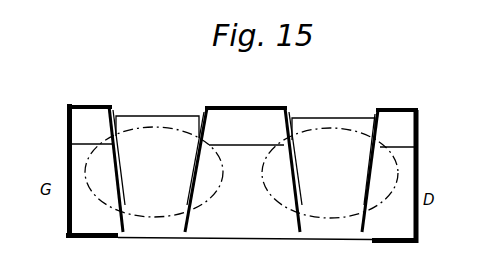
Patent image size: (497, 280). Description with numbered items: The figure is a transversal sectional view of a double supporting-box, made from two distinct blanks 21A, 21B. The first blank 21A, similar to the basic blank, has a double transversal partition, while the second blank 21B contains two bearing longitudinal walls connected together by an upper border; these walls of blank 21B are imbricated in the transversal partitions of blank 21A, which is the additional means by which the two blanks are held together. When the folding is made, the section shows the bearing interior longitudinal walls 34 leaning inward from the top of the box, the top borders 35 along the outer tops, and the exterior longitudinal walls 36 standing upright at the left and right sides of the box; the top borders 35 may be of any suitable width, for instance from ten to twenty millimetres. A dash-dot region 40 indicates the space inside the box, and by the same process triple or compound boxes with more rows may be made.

The top borders 35 is at (98, 105).
The exterior longitudinal walls 36 is at (68, 130).
The blank 21A is at (68, 208).
The blank 21B is at (263, 107).
The lid / cover region 40 is at (158, 137).
The bearing interior longitudinal walls 34 is at (195, 175).